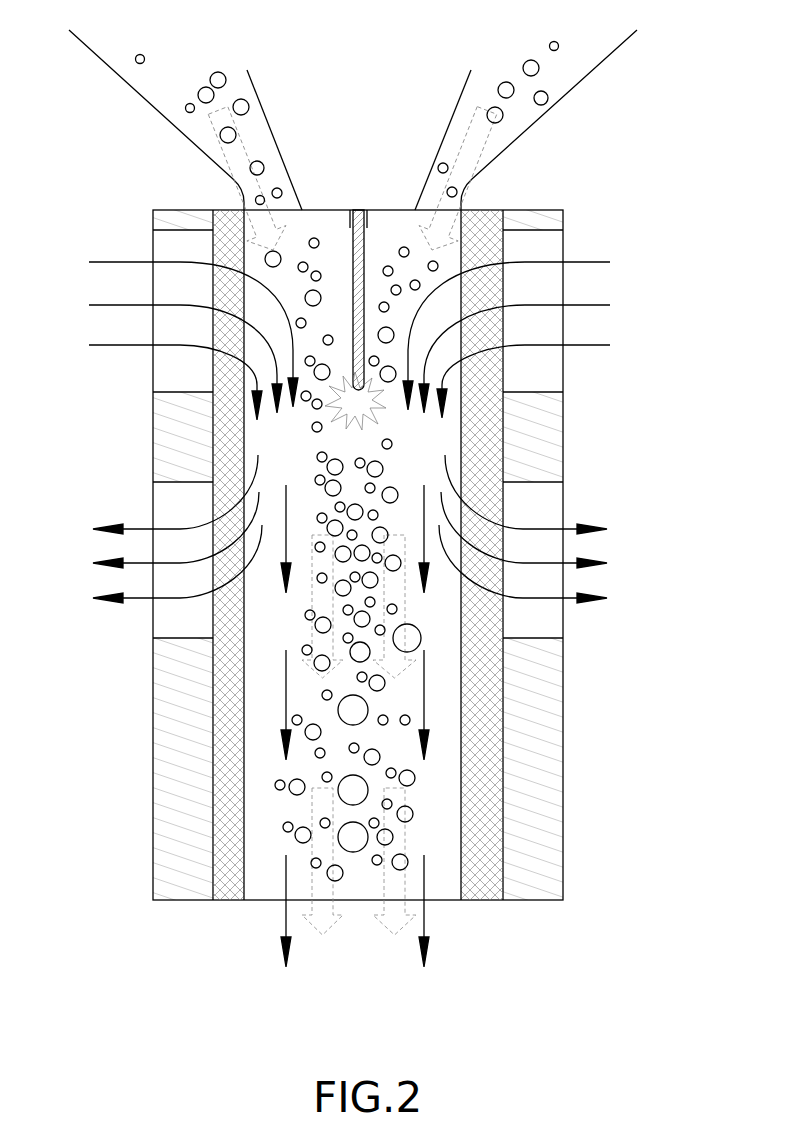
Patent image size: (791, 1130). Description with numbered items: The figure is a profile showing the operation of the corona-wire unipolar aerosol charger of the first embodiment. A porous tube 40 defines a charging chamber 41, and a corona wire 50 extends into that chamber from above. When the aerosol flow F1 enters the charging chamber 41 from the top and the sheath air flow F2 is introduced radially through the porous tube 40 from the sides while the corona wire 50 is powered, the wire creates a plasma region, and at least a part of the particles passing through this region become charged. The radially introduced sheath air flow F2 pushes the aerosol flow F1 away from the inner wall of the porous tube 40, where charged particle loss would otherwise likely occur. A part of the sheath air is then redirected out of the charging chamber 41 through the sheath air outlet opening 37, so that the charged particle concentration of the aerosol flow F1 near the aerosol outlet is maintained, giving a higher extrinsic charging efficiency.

The sheath air outlet opening 37 is at (540, 625).
The porous tube 40 is at (483, 460).
The charging chamber 41 is at (437, 433).
The corona wire 50 is at (362, 252).
The aerosol flow F1 is at (470, 142).
The sheath air flow F2 is at (580, 262).